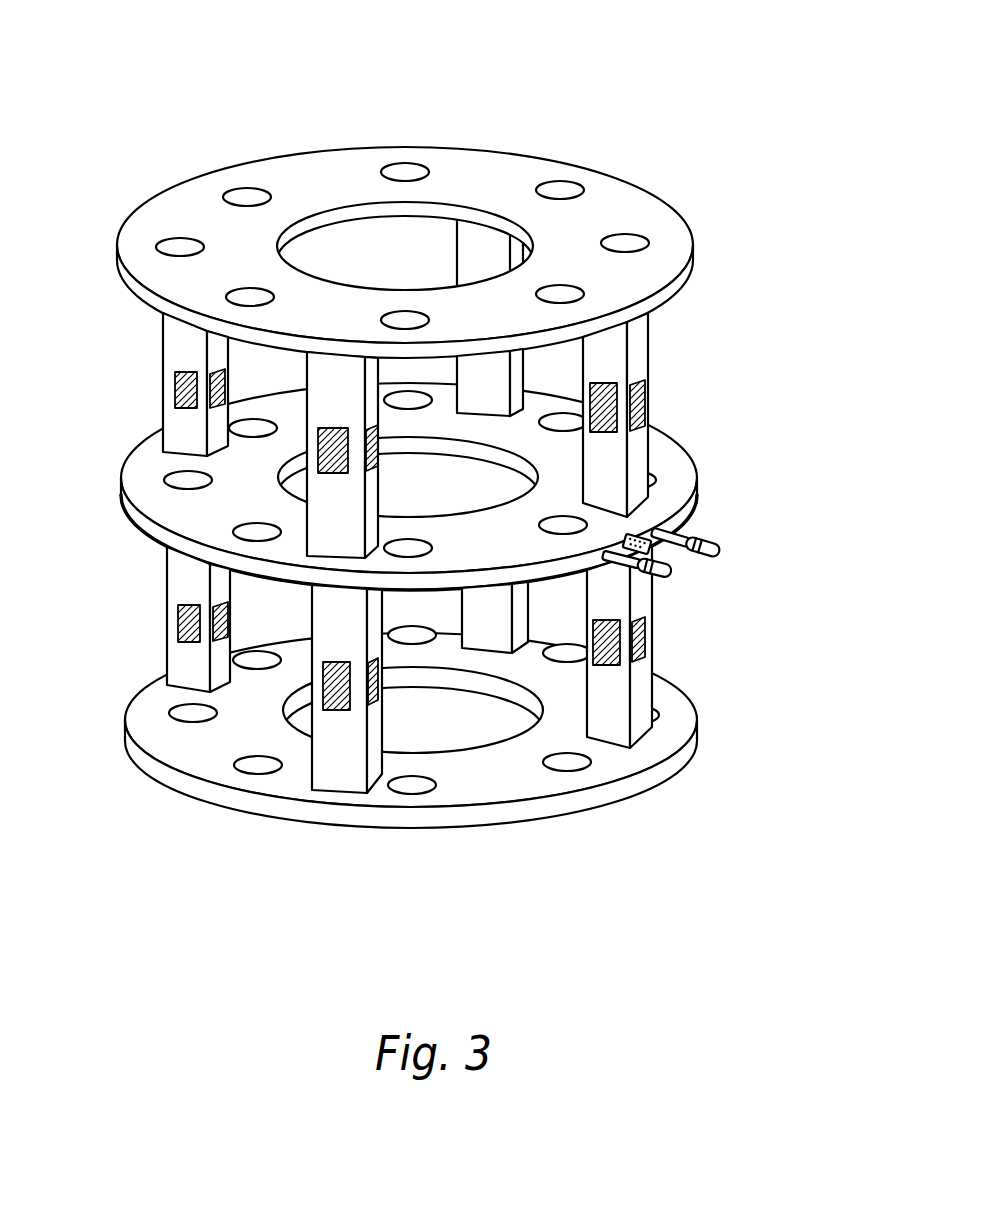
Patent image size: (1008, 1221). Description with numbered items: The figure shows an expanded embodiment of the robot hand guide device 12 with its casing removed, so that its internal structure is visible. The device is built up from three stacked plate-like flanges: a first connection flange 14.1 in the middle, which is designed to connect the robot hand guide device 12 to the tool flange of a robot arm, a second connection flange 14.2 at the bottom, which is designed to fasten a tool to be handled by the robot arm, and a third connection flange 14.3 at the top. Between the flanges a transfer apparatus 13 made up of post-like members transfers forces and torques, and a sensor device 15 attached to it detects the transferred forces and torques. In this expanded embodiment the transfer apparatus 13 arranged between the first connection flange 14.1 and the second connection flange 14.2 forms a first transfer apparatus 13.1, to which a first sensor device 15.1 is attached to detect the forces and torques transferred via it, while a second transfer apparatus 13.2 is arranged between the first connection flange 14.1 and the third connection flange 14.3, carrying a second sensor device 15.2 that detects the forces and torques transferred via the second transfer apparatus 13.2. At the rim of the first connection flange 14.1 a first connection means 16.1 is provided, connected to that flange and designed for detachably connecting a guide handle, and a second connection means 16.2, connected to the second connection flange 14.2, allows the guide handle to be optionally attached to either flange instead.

The robot hand guide device 12 is at (232, 136).
The transfer apparatus 13 is at (342, 576).
The first transfer apparatus 13.1 is at (492, 625).
The second transfer apparatus 13.2 is at (176, 347).
The first connection flange 14.1 is at (698, 502).
The second connection flange 14.2 is at (667, 763).
The third connection flange 14.3 is at (632, 200).
The sensor device 15 is at (336, 634).
The first sensor device 15.1 is at (188, 630).
The second sensor device 15.2 is at (370, 452).
The first connection means 16.1 is at (748, 586).
The second connection means 16.2 is at (691, 581).